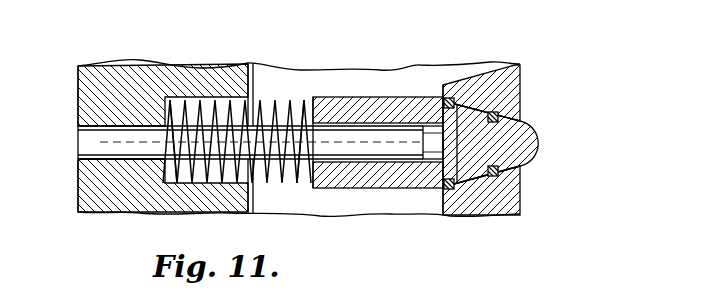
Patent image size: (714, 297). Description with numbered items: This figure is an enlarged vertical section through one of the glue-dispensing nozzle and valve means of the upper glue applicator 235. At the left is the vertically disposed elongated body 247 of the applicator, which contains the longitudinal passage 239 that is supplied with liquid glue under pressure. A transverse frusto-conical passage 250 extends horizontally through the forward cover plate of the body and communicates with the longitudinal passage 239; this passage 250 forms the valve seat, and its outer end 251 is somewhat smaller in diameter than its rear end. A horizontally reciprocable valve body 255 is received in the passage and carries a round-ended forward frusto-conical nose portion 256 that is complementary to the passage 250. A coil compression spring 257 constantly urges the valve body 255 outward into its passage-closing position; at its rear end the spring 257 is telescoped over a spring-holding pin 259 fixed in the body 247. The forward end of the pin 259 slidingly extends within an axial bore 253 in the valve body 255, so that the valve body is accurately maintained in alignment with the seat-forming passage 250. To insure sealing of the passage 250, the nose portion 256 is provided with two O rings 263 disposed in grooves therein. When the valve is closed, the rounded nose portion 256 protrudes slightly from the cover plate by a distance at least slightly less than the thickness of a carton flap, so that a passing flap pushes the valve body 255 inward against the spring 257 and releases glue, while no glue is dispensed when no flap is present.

The upper glue applicator 235 is at (184, 58).
The longitudinal passage 239 is at (383, 72).
The elongated body 247 is at (78, 196).
The frusto-conical passage 250 is at (447, 103).
The outer end of transverse passage 251 is at (520, 115).
The axial bore 253 is at (366, 162).
The valve body 255 is at (410, 188).
The frusto-conical nose portion 256 is at (538, 143).
The coil compression spring 257 is at (278, 100).
The spring-holding pin 259 is at (132, 145).
The O rings 263 is at (497, 177).